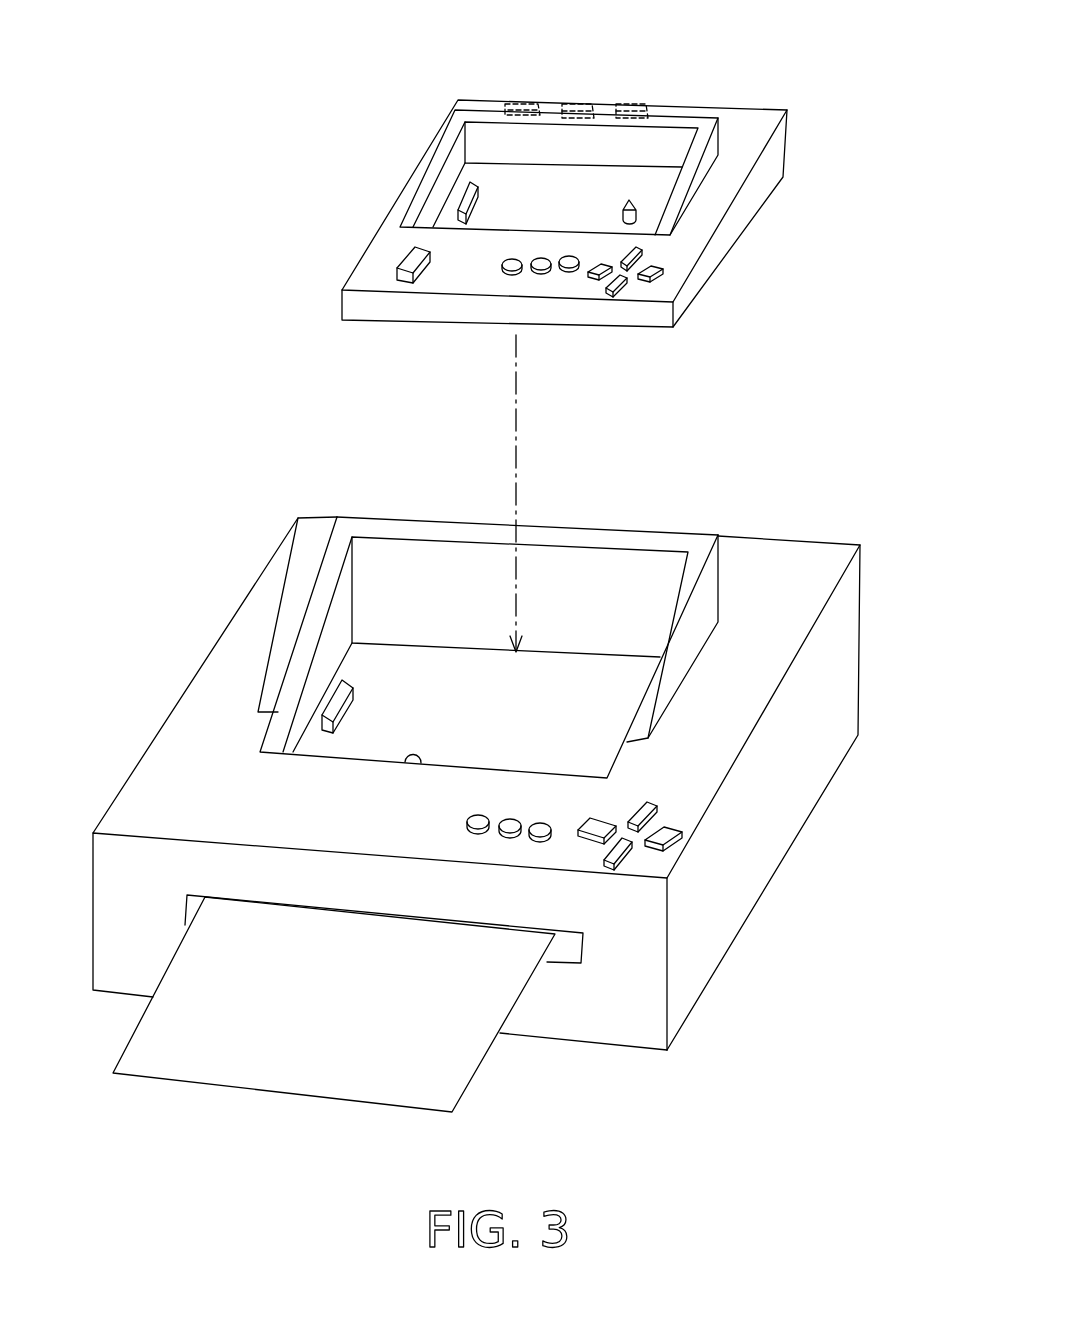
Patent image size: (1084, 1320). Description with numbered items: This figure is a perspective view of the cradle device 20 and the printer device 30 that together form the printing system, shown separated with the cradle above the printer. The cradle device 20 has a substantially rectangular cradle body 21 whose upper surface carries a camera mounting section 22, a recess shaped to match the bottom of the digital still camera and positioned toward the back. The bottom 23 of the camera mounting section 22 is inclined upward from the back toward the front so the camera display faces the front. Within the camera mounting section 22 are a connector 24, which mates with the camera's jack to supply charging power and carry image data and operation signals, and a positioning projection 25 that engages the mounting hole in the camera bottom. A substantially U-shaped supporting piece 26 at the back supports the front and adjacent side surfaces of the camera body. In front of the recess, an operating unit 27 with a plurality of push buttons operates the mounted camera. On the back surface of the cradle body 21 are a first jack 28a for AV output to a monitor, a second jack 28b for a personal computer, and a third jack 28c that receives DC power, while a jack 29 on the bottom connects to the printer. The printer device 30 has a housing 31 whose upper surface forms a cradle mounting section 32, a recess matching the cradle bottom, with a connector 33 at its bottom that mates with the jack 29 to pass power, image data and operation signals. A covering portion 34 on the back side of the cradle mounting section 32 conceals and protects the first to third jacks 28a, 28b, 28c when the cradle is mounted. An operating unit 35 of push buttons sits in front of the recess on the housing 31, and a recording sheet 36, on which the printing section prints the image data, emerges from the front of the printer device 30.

The cradle device 20 is at (601, 195).
The cradle body 21 is at (742, 213).
The camera mounting section 22 is at (568, 183).
The bottom of the camera mounting section 23 is at (517, 183).
The connector 24 is at (475, 183).
The positioning projection 25 is at (630, 205).
The supporting piece 26 is at (717, 152).
The operating unit 27 is at (637, 285).
The first jack 28a is at (527, 110).
The second jack 28b is at (578, 100).
The third jack 28c is at (643, 108).
The jack 29 is at (400, 262).
The printer device 30 is at (509, 771).
The housing 31 is at (760, 545).
The cradle mounting section 32 is at (418, 766).
The connector 33 is at (332, 702).
The covering portion 34 is at (597, 533).
The operating unit 35 is at (662, 817).
The recording sheet 36 is at (442, 1060).